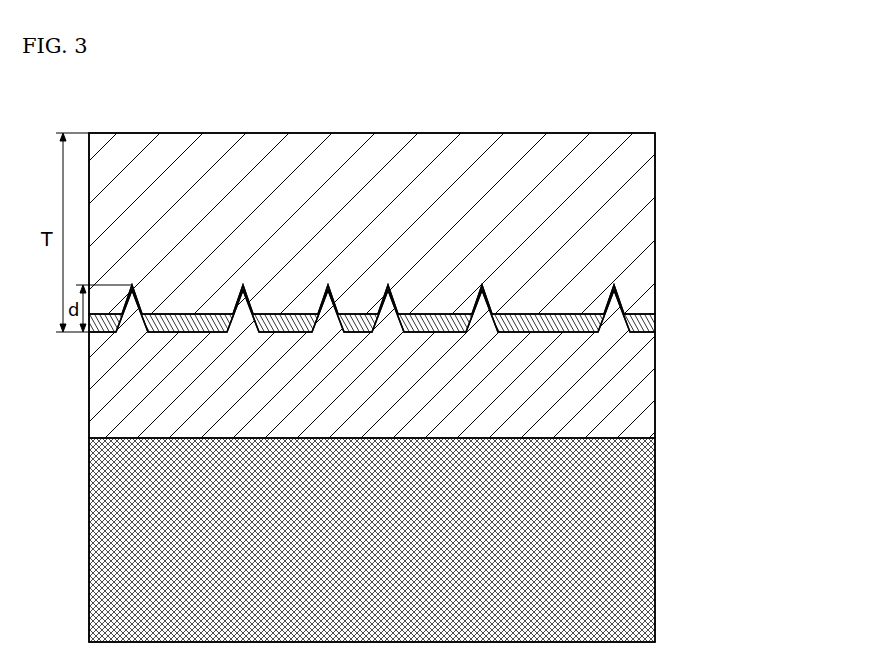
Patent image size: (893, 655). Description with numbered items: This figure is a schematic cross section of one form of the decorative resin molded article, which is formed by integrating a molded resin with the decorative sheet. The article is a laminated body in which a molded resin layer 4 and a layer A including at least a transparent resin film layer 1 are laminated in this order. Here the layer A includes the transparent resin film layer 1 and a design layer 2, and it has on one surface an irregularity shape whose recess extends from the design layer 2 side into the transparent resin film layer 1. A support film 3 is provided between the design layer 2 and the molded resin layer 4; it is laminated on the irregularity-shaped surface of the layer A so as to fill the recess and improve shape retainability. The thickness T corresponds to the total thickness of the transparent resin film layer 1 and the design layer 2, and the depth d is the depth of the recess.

The transparent resin film layer 1 is at (655, 238).
The design layer 2 is at (422, 308).
The support film 3 is at (655, 388).
The molded resin layer 4 is at (655, 533).
The layer including at least transparent resin film layer A is at (444, 232).